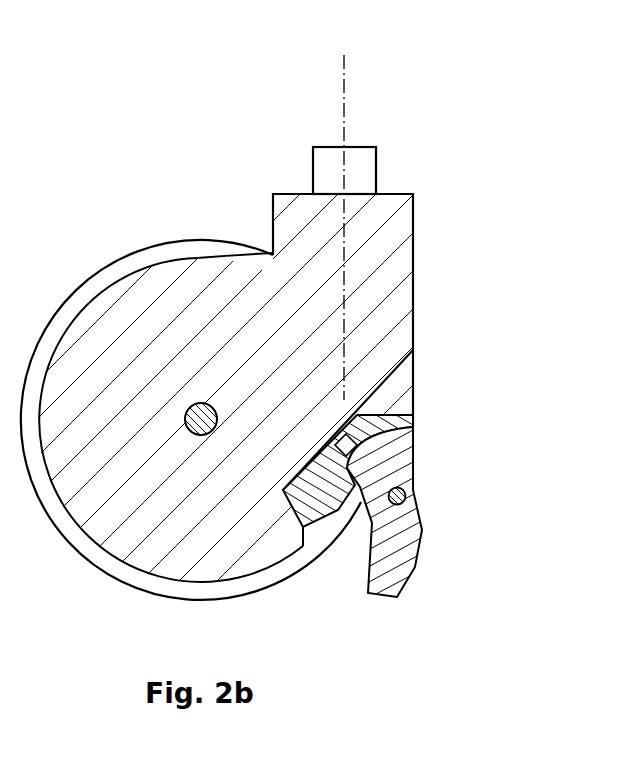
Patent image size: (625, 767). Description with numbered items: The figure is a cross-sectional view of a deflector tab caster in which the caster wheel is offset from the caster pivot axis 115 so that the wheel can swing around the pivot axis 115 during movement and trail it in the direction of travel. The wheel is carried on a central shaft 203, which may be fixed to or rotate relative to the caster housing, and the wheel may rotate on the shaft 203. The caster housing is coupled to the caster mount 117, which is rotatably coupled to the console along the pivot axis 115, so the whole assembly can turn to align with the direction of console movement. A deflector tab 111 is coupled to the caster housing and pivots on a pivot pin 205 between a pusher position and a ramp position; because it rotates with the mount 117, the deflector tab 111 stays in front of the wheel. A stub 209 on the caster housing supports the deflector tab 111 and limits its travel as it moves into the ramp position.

The caster pivot axis 115 is at (344, 63).
The caster mount 117 is at (313, 163).
The central shaft 203 is at (199, 403).
The pivot pin 205 is at (412, 488).
The deflector tab 111 is at (421, 552).
The stub 209 is at (325, 517).